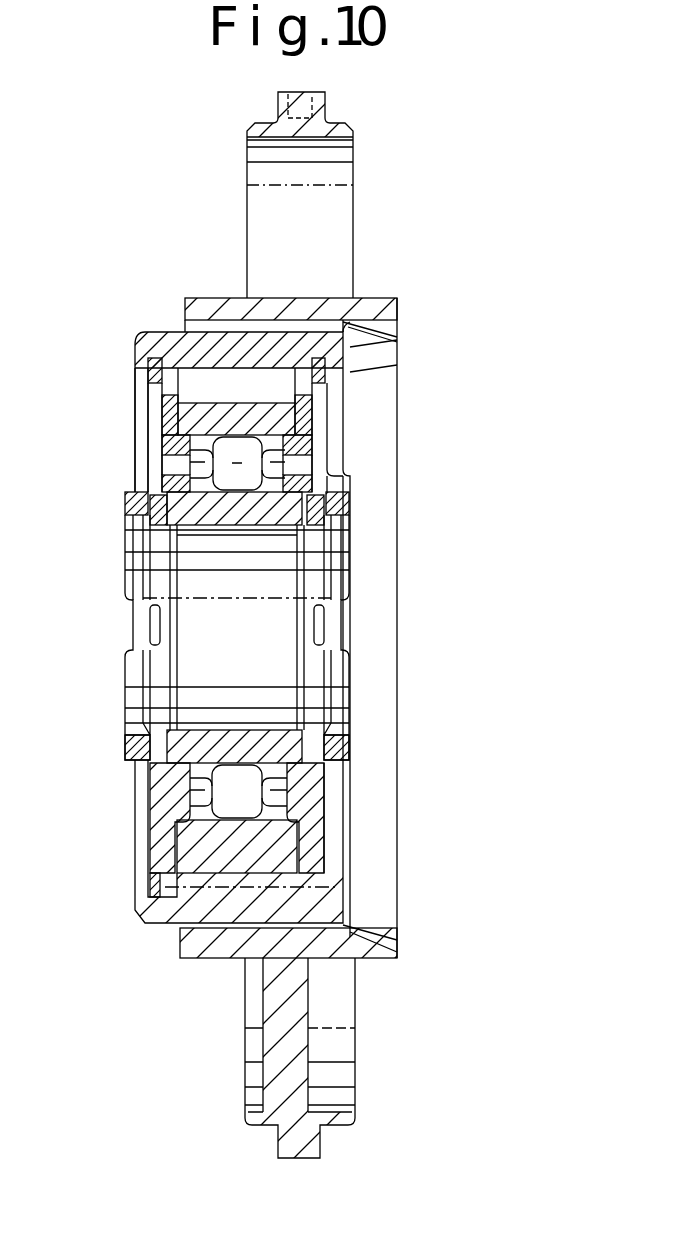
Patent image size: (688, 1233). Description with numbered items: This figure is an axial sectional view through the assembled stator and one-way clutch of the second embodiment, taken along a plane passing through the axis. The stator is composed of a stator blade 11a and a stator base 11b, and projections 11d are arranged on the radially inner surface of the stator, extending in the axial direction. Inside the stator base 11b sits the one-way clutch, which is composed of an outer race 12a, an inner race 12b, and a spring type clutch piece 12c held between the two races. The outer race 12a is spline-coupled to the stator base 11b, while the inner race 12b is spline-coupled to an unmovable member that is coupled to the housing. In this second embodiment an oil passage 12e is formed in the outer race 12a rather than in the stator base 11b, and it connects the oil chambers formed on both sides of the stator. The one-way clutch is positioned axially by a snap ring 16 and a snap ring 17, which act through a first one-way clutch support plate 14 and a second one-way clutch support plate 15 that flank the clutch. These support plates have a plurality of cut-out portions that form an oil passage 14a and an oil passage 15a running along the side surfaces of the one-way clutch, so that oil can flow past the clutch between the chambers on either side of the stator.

The stator blade 11a is at (240, 223).
The stator base 11b is at (183, 326).
The projections 11d is at (297, 882).
The outer race 12a is at (262, 404).
The inner race 12b is at (265, 510).
The spring type clutch piece 12c is at (150, 493).
The oil passage 12e is at (313, 328).
The first one-way clutch support plate 14 is at (300, 443).
The oil passage 14a is at (326, 493).
The second one-way clutch support plate 15 is at (158, 410).
The oil passage 15a is at (153, 461).
The snap ring 16 is at (328, 371).
The snap ring 17 is at (139, 337).